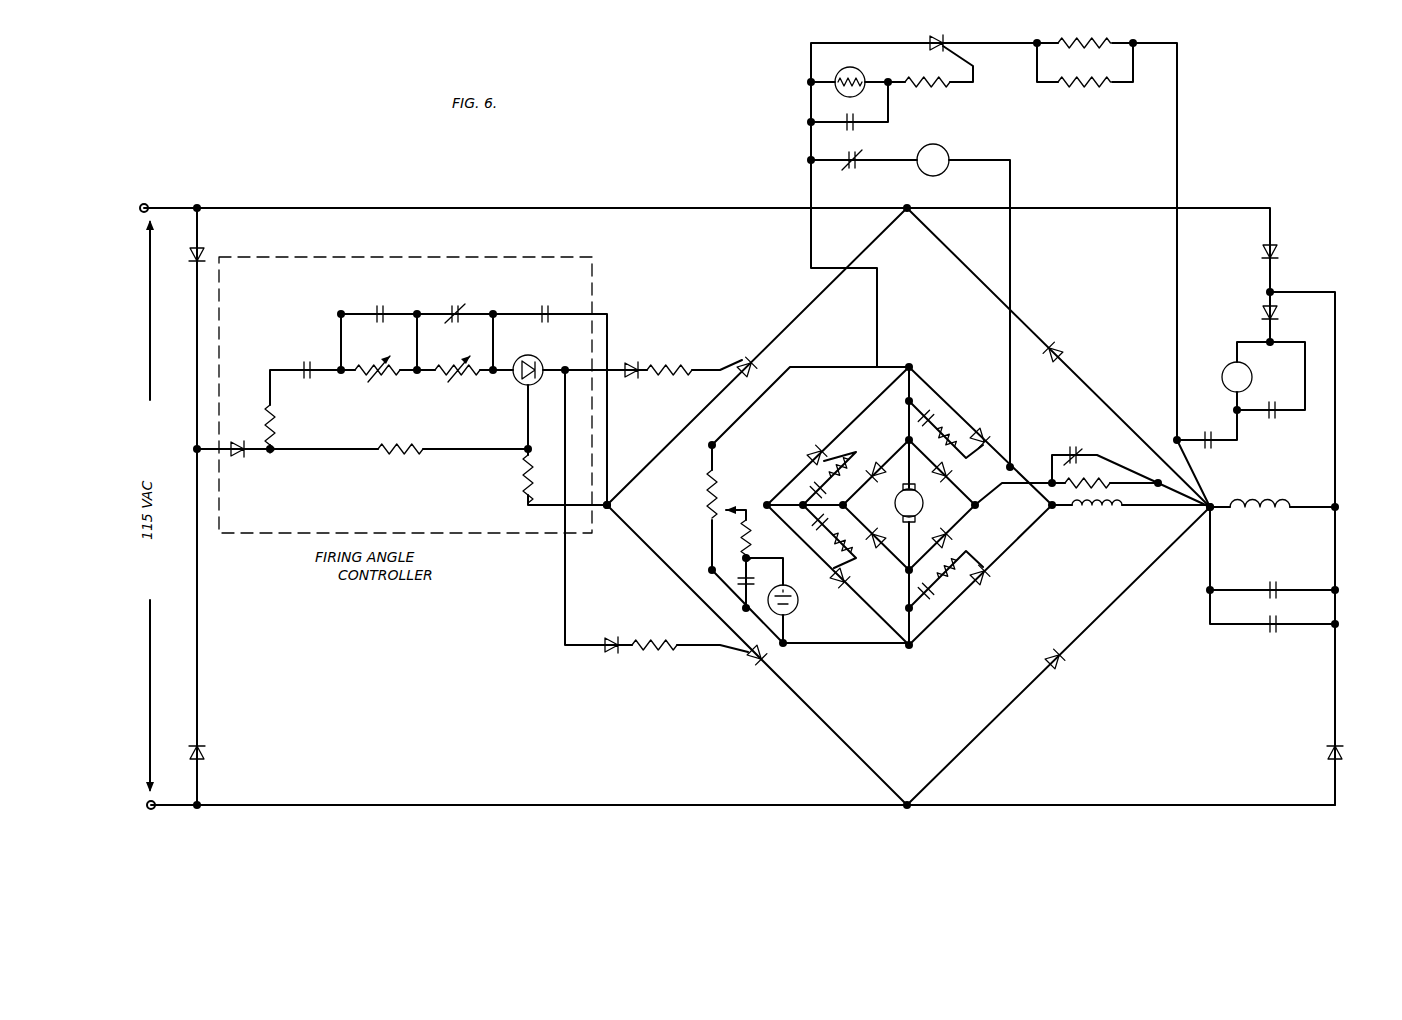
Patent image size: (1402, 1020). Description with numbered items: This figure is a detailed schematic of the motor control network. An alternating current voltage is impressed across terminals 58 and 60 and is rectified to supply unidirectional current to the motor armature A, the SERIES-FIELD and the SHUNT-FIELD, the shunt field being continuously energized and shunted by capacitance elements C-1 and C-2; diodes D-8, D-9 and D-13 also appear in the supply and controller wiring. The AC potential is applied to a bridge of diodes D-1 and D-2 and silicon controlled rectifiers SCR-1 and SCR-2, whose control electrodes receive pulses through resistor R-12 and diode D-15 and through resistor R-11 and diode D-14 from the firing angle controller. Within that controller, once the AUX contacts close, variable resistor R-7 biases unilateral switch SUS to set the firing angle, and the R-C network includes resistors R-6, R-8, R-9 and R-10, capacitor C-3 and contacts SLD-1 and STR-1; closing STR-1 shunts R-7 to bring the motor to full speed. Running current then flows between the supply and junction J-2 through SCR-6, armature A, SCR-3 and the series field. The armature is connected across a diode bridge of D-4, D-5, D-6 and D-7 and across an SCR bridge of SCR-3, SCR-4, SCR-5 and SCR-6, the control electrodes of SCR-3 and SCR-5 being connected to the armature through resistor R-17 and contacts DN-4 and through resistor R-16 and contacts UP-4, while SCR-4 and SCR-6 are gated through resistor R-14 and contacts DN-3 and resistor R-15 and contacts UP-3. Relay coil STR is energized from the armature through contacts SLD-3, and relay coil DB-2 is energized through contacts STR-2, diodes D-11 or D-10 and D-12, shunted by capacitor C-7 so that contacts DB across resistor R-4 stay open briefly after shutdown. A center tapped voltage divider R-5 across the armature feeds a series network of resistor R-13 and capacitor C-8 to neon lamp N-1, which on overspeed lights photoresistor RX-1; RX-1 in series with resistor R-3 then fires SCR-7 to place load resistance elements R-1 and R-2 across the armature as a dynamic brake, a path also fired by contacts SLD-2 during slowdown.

The terminal 58 is at (147, 204).
The terminal 60 is at (151, 809).
The diode D-1 is at (1065, 665).
The diode D-2 is at (1068, 352).
The diode D-4 is at (969, 531).
The diode D-5 is at (944, 483).
The diode D-6 is at (884, 448).
The diode D-7 is at (872, 528).
The diode D-8 is at (209, 248).
The diode D-9 is at (212, 745).
The diode D-10 is at (1353, 744).
The diode D-11 is at (1289, 246).
The diode D-12 is at (1288, 321).
The diode D-13 is at (247, 460).
The diode D-14 is at (632, 360).
The diode D-15 is at (614, 635).
The silicon controlled rectifier SCR-1 is at (741, 663).
The silicon controlled rectifier SCR-2 is at (739, 356).
The silicon controlled rectifier SCR-3 is at (990, 585).
The silicon controlled rectifier SCR-4 is at (834, 589).
The silicon controlled rectifier SCR-5 is at (989, 427).
The silicon controlled rectifier SCR-6 is at (814, 447).
The silicon controlled rectifier SCR-7 is at (944, 33).
The load resistance element R-1 is at (1084, 34).
The load resistance element R-2 is at (1084, 93).
The resistor R-3 is at (927, 91).
The resistor R-4 is at (1088, 468).
The center tapped voltage divider R-5 is at (696, 497).
The resistor R-6 is at (255, 429).
The variable resistor R-7 is at (377, 376).
The variable resistor R-8 is at (457, 376).
The resistor R-9 is at (400, 459).
The resistor R-10 is at (509, 479).
The resistor R-11 is at (675, 359).
The resistor R-12 is at (654, 655).
The resistor R-13 is at (763, 541).
The resistor R-14 is at (864, 564).
The resistor R-15 is at (806, 468).
The resistor R-16 is at (960, 415).
The resistor R-17 is at (960, 593).
The capacitance element C-1 is at (1270, 581).
The capacitance element C-2 is at (1267, 633).
The capacitor C-3 is at (544, 303).
The capacitor C-7 is at (1272, 419).
The capacitor C-8 is at (757, 573).
The AUX contacts AUX is at (297, 362).
The contacts STR-1 is at (377, 303).
The contacts STR-2 is at (1212, 450).
The contacts SLD-1 is at (462, 304).
The contacts SLD-2 is at (845, 113).
The contacts SLD-3 is at (848, 169).
The contacts DB is at (1072, 446).
The contacts UP-3 is at (800, 490).
The contacts UP-4 is at (930, 398).
The contacts DN-3 is at (810, 523).
The contacts DN-4 is at (930, 602).
The unilateral switch SUS is at (536, 362).
The photoresistor element RX-1 is at (847, 73).
The relay coil STR is at (933, 160).
The neon lamp N-1 is at (791, 610).
The motor armature A is at (909, 503).
The relay coil DB-2 is at (1237, 377).
The series field SERIES-FIELD is at (1092, 524).
The shunt field SHUNT-FIELD is at (1260, 524).
The junction J-2 is at (607, 510).